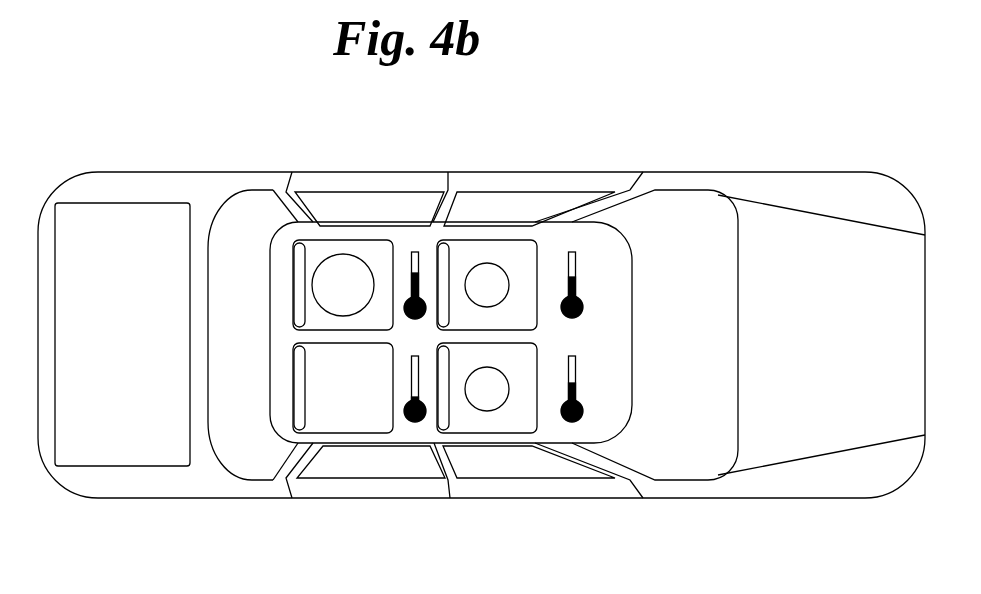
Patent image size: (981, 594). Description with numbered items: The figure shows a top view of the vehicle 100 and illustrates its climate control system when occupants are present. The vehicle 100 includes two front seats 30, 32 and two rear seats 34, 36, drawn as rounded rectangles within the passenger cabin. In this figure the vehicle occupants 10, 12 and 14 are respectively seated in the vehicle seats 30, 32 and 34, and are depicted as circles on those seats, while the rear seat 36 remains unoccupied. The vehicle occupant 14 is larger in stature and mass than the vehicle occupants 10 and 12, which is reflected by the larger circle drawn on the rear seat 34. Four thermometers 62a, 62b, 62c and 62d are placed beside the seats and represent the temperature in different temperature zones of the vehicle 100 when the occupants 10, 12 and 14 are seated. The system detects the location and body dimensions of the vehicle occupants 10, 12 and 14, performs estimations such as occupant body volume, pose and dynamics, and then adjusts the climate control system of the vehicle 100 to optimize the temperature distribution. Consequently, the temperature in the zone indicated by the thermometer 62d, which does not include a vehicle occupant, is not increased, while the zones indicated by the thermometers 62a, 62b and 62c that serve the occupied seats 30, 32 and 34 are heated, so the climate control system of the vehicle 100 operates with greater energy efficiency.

The vehicle 100 is at (481, 335).
The front seat 30 is at (487, 240).
The front seat 32 is at (487, 433).
The rear seat 34 is at (343, 240).
The rear seat 36 is at (343, 433).
The vehicle occupant 10 is at (487, 285).
The vehicle occupant 12 is at (487, 389).
The vehicle occupant 14 is at (343, 285).
The thermometer 62a is at (572, 252).
The thermometer 62b is at (572, 422).
The thermometer 62c is at (415, 252).
The thermometer 62d is at (415, 422).